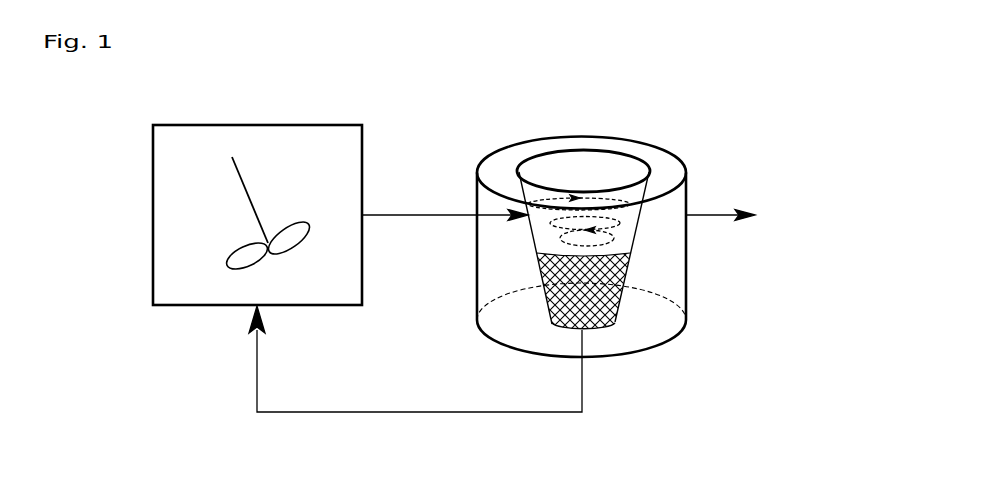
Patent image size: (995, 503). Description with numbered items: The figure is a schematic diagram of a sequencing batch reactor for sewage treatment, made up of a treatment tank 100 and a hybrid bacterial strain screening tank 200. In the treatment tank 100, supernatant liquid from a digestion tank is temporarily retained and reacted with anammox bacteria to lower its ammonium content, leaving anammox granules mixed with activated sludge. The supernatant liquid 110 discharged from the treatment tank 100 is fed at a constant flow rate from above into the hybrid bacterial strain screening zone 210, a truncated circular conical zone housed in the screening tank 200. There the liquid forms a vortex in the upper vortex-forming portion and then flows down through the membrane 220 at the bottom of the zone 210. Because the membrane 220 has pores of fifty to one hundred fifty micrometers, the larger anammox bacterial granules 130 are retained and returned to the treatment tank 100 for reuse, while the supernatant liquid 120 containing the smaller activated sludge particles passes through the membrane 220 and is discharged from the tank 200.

The treatment tank 100 is at (153, 214).
The supernatant liquid 110 is at (447, 214).
The supernatant liquid containing activated sludge 120 is at (720, 215).
The anammox bacterial granules 130 is at (418, 413).
The hybrid bacterial strain screening tank 200 is at (688, 170).
The hybrid bacterial strain screening zone 210 is at (630, 235).
The membrane 220 is at (598, 298).